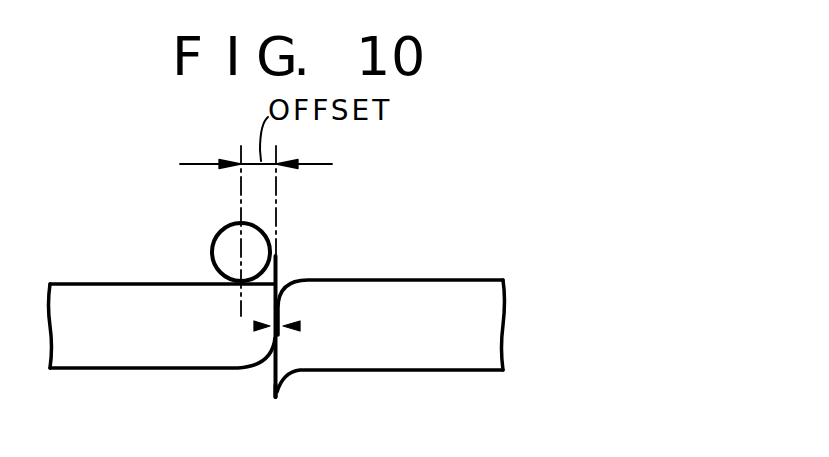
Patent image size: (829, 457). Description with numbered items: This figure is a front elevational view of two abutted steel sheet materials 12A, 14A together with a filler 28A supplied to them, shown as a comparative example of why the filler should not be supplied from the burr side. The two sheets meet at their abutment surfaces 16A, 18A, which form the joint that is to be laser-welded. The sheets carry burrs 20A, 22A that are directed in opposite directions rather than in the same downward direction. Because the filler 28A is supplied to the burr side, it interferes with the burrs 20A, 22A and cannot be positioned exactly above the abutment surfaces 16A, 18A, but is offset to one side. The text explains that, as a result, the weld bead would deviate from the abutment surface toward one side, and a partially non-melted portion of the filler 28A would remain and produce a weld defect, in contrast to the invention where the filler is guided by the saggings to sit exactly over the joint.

The steel sheet material 12A is at (102, 287).
The steel sheet material 14A is at (427, 303).
The abutment surface 16A is at (299, 326).
The abutment surface 18A is at (256, 326).
The burr 20A is at (279, 274).
The burr 22A is at (277, 393).
The filler 28A is at (213, 246).